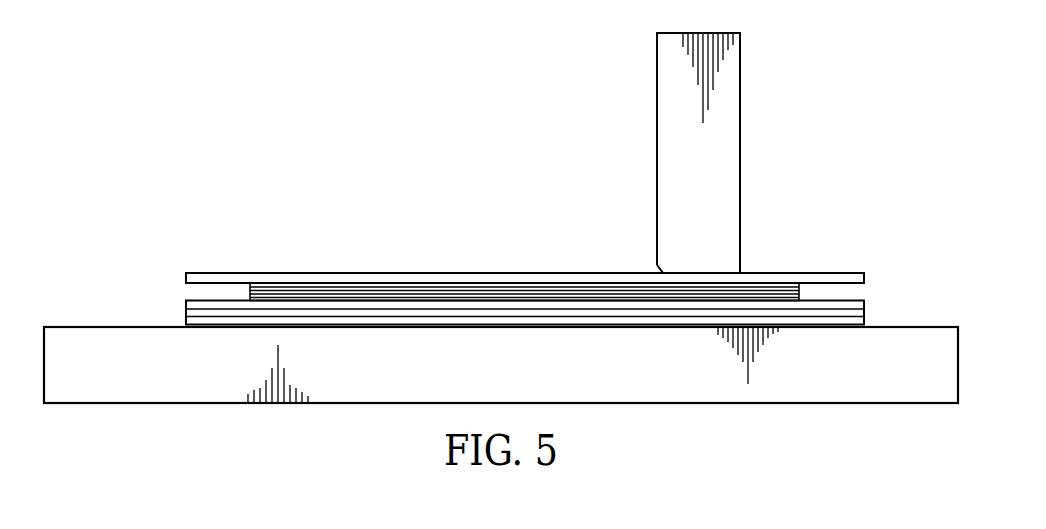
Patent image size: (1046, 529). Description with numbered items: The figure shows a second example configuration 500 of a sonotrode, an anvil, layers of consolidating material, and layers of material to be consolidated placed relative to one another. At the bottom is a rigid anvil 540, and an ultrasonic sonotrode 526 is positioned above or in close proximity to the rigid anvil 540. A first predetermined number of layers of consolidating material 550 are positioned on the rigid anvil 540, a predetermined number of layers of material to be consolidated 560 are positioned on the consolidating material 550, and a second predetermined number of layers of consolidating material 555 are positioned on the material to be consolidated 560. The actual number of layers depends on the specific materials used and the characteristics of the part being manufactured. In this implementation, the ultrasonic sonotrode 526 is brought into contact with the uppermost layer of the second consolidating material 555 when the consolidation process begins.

The configuration 500 is at (327, 120).
The ultrasonic sonotrode 526 is at (741, 154).
The rigid anvil 540 is at (224, 404).
The first predetermined number of layers of consolidating material 550 is at (185, 312).
The second predetermined number of layers of consolidating material 555 is at (353, 272).
The layers of material to be consolidated 560 is at (810, 291).